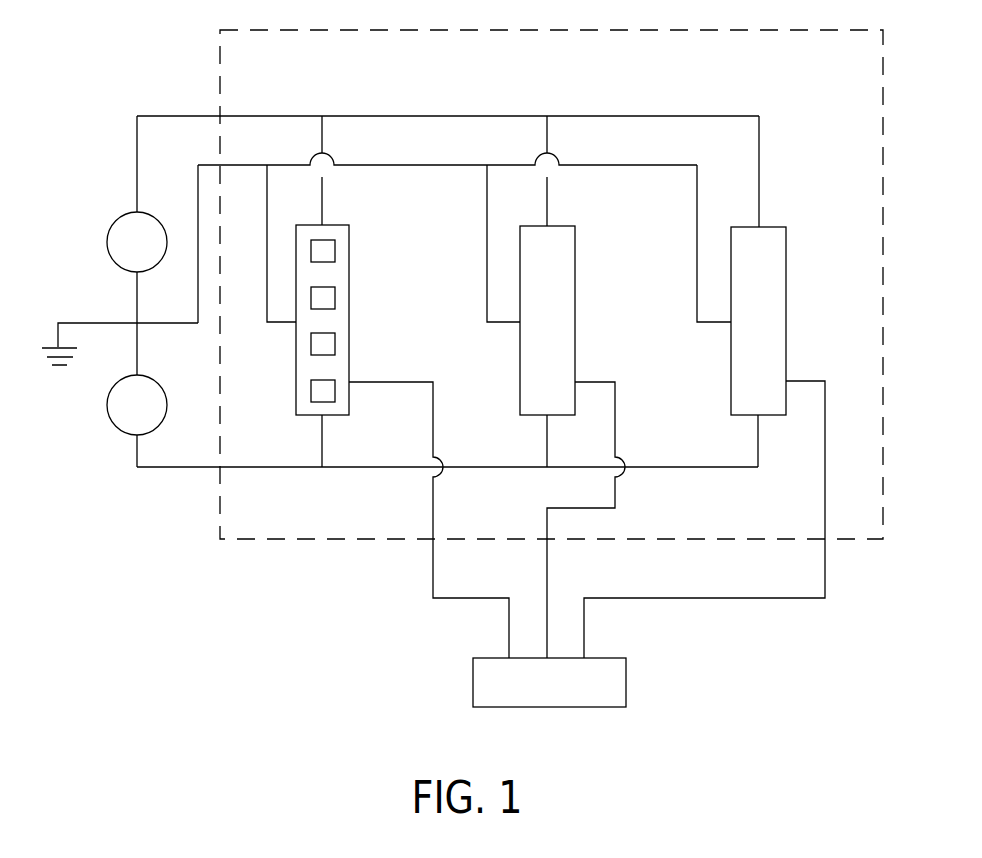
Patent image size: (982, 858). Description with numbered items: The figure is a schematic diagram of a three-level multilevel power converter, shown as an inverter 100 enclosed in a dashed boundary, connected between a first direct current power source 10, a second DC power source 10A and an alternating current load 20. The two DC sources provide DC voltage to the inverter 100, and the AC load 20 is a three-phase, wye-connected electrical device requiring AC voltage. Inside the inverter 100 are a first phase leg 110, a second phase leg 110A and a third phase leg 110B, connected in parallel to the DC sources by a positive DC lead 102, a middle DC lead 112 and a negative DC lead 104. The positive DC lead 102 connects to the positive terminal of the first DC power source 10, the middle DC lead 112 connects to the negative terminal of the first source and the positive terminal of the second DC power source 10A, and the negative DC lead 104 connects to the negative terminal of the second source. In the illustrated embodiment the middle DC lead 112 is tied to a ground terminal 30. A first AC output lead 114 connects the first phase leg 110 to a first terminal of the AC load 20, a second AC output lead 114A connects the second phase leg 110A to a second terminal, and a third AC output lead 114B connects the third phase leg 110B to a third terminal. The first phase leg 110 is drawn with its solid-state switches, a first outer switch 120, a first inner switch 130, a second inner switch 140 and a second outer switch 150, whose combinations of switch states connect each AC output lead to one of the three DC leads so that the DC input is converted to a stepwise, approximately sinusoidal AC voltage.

The first direct current power source 10 is at (102, 196).
The second DC power source 10A is at (100, 452).
The alternating current load 20 is at (585, 707).
The ground terminal 30 is at (120, 364).
The inverter 100 is at (252, 605).
The positive DC lead 102 is at (503, 116).
The negative DC lead 104 is at (262, 468).
The first phase leg 110 is at (349, 233).
The second phase leg 110A is at (575, 243).
The third phase leg 110B is at (786, 248).
The middle DC lead 112 is at (283, 322).
The first AC output lead 114 is at (445, 600).
The second AC output lead 114A is at (547, 566).
The third AC output lead 114B is at (737, 599).
The first outer switch 120 is at (335, 250).
The first inner switch 130 is at (335, 298).
The second inner switch 140 is at (335, 345).
The second outer switch 150 is at (325, 398).